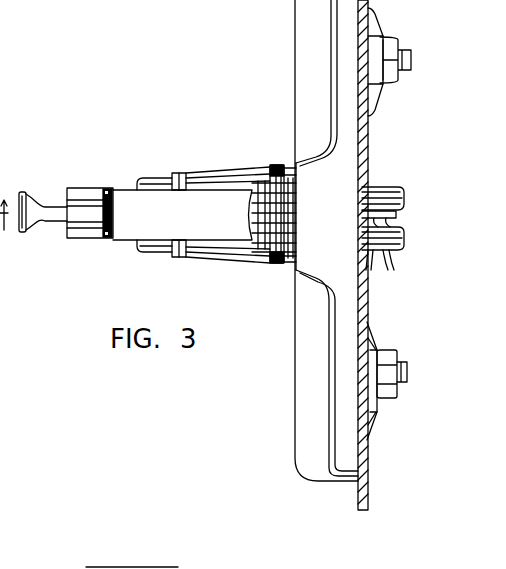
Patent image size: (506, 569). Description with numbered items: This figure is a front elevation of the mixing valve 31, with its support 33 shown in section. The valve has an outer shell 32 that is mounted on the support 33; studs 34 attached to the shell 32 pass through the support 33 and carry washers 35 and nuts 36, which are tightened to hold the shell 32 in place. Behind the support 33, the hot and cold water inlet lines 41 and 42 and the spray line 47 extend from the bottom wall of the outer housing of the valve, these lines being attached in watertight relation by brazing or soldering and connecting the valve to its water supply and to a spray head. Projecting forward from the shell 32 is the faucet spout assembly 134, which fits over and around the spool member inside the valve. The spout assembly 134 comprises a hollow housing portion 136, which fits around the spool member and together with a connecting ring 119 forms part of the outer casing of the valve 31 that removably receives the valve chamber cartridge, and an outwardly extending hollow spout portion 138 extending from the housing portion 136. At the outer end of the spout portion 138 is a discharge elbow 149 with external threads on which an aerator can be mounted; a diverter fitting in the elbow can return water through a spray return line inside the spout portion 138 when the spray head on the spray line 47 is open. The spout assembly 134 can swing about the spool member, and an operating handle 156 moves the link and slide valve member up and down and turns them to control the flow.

The mixing valve 31 is at (270, 299).
The outer shell 32 is at (300, 411).
The support 33 is at (364, 498).
The studs 34 is at (398, 392).
The washers 35 is at (368, 345).
The nuts 36 is at (376, 405).
The hot water inlet line 41 is at (380, 187).
The cold water inlet line 42 is at (381, 250).
The spray line 47 is at (376, 256).
The connecting ring 119 is at (270, 166).
The spout assembly 134 is at (216, 163).
The hollow housing portion 136 is at (214, 258).
The hollow spout portion 138 is at (128, 232).
The discharge elbow 149 is at (77, 232).
The operating handle 156 is at (47, 213).